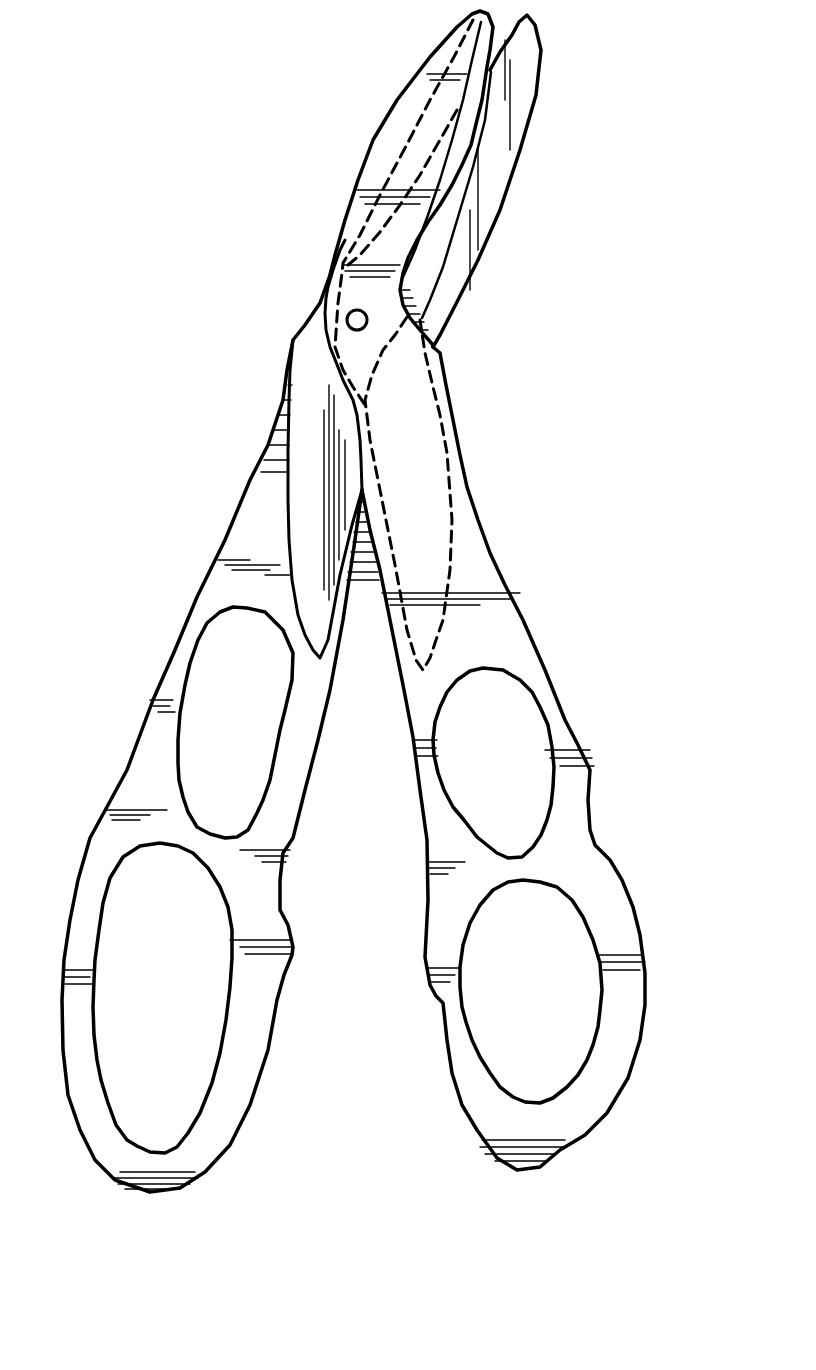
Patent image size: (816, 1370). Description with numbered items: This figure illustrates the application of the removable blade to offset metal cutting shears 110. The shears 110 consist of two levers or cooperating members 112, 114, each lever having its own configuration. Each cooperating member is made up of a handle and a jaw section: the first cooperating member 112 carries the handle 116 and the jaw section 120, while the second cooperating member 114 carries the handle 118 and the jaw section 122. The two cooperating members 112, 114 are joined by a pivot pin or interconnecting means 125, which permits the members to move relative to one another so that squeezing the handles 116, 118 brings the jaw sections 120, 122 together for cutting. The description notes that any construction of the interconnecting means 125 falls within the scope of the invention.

The offset metal cutting shears 110 is at (506, 401).
The cooperating member 112 is at (237, 543).
The cooperating member 114 is at (480, 560).
The handle 116 is at (138, 782).
The handle 118 is at (610, 893).
The jaw section 120 is at (450, 276).
The jaw section 122 is at (402, 107).
The pivot pin 125 is at (347, 320).